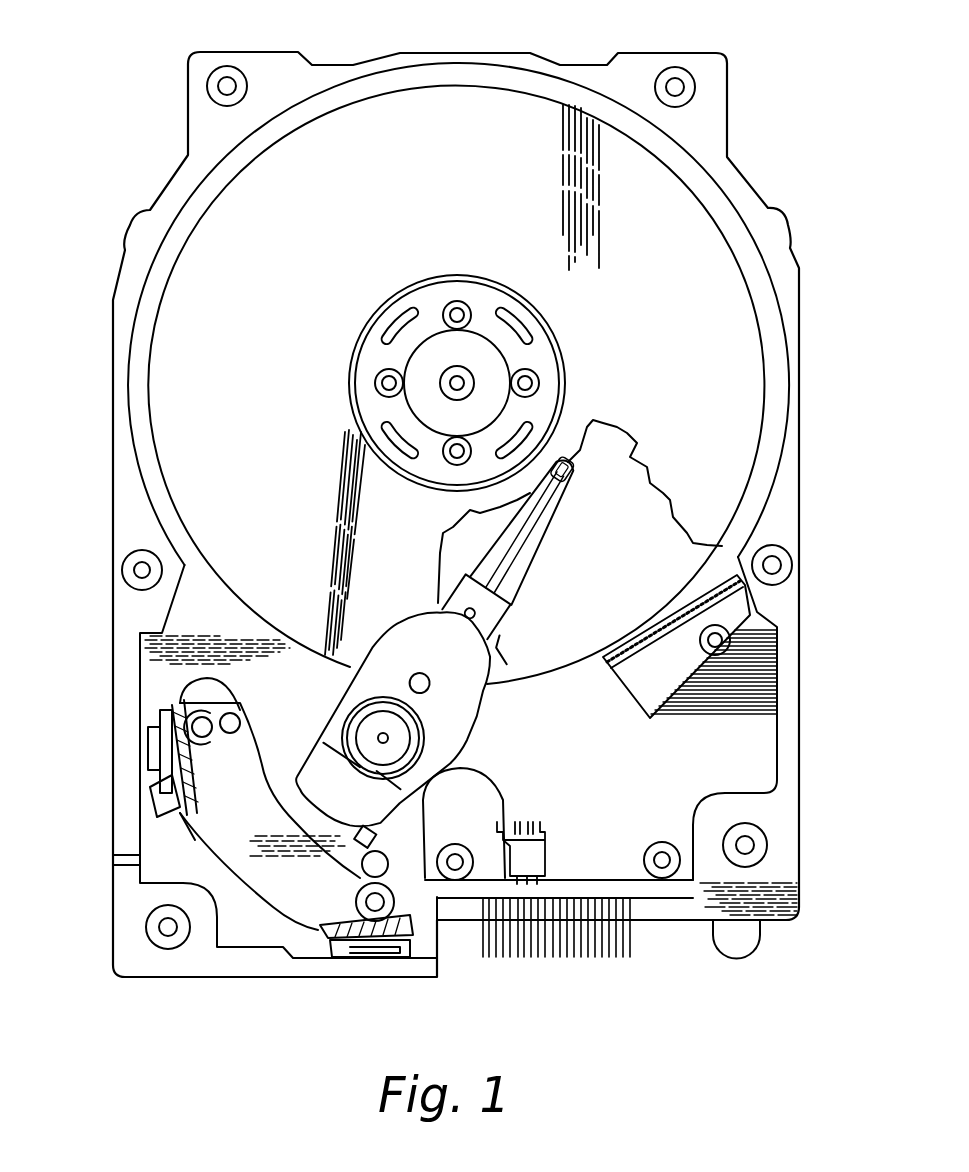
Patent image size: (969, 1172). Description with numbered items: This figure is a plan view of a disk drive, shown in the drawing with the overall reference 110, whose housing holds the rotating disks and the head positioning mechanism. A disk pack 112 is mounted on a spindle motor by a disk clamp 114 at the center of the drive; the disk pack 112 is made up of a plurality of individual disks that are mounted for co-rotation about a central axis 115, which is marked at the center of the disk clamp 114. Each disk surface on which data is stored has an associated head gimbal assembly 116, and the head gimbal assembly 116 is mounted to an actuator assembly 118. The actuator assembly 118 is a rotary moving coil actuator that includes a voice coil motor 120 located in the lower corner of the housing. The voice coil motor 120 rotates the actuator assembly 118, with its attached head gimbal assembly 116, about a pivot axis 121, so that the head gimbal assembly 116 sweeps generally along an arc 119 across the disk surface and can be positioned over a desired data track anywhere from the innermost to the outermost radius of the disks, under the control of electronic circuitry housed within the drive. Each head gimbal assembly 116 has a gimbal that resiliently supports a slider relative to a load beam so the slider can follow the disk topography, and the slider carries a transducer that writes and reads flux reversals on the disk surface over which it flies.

The disc drive 110 is at (785, 90).
The disk pack 112 is at (492, 183).
The disk clamp 114 is at (376, 294).
The central axis 115 is at (459, 381).
The head gimbal assembly 116 is at (575, 453).
The actuator assembly 118 is at (510, 625).
The arc 119 is at (563, 527).
The voice coil motor 120 is at (228, 832).
The pivot axis 121 is at (381, 736).